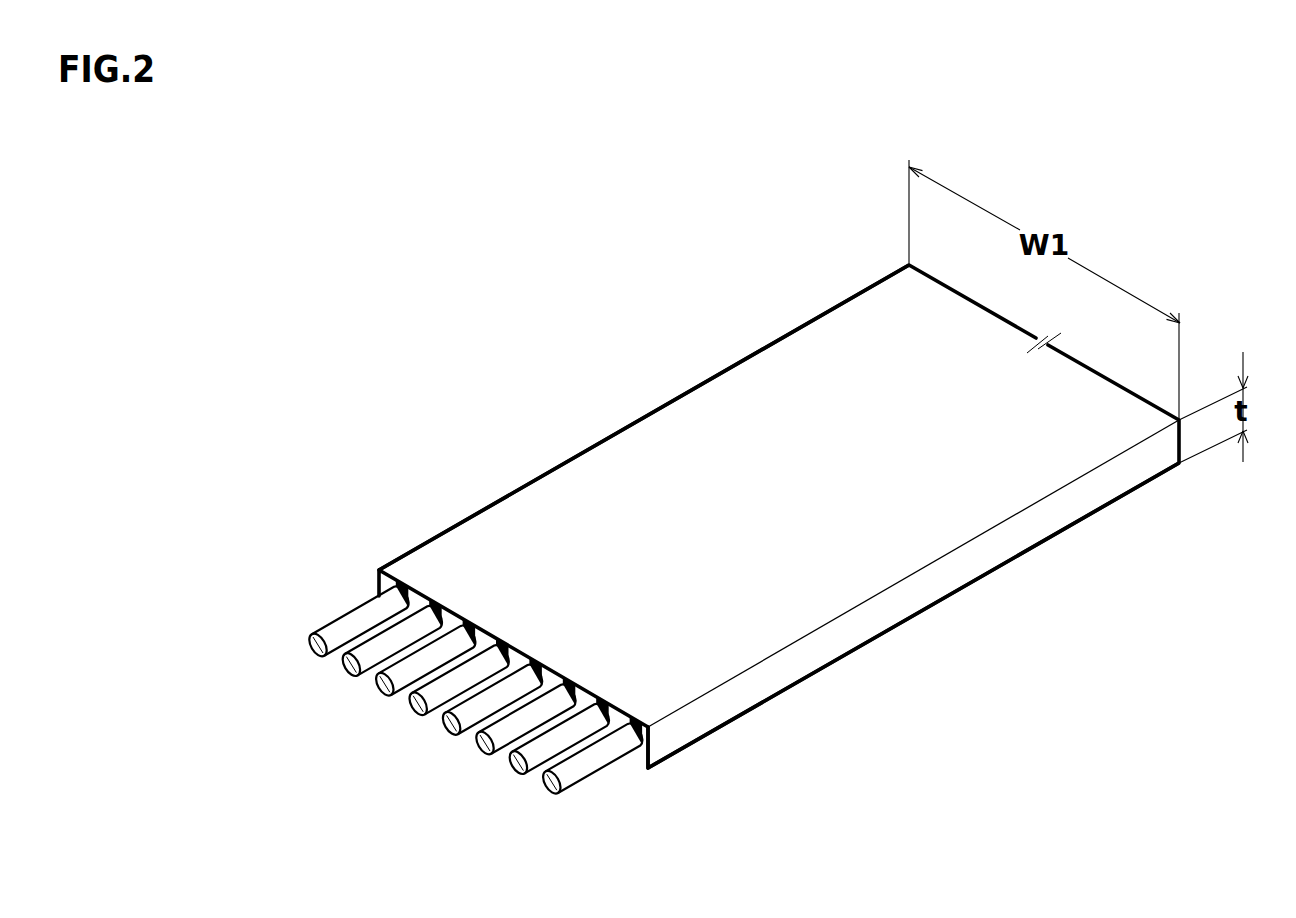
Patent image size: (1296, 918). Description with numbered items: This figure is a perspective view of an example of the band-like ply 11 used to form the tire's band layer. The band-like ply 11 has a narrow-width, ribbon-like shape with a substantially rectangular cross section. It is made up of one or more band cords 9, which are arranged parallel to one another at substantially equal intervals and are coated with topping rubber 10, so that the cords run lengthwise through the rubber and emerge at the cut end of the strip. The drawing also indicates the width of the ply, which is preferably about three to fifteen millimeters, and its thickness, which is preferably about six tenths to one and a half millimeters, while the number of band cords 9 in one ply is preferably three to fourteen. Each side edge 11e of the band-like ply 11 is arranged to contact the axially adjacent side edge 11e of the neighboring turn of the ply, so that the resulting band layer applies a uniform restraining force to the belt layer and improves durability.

The band cord 9 is at (337, 633).
The topping rubber 10 is at (386, 582).
The band-like ply 11 is at (703, 571).
The side edge 11e is at (588, 445).